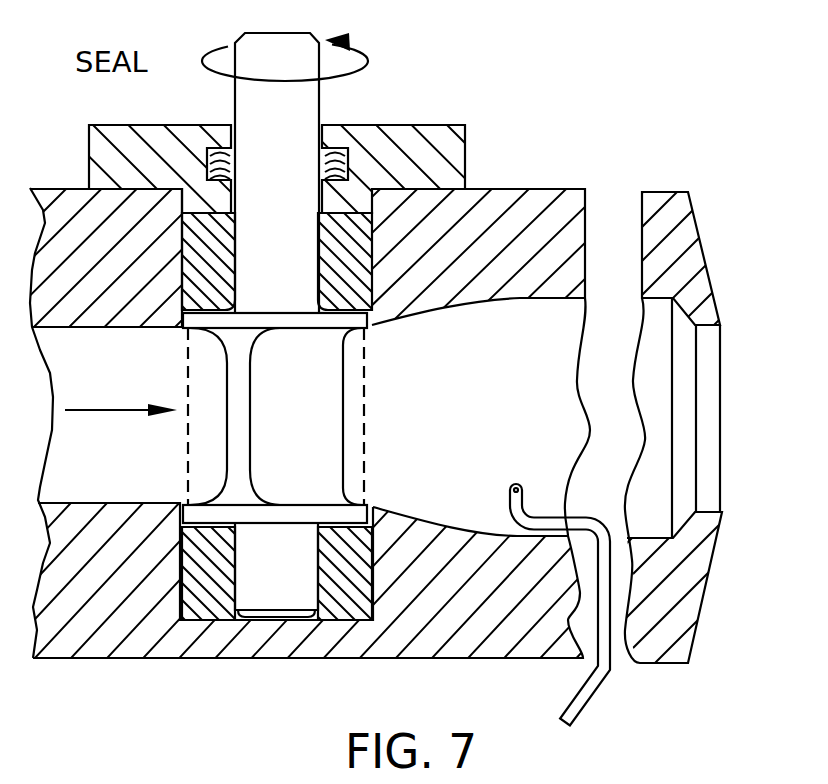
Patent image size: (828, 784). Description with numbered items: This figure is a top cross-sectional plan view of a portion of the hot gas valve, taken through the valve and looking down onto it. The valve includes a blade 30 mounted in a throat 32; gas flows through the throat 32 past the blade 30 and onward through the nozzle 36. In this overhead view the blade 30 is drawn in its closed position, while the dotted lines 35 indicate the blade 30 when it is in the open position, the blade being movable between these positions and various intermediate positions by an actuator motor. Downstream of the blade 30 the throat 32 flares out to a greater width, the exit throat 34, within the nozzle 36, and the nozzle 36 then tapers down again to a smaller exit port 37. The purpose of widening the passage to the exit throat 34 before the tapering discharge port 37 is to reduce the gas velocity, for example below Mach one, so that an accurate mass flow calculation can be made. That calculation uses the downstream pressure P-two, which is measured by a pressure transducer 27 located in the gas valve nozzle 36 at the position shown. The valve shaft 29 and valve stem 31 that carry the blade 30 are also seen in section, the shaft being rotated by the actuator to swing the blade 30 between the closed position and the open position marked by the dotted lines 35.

The pressure transducer 27 is at (580, 708).
The valve shaft 29 is at (298, 121).
The blade 30 is at (317, 430).
The valve stem 31 is at (295, 576).
The throat 32 is at (112, 492).
The exit throat 34 is at (508, 360).
The dotted lines 35 is at (187, 366).
The nozzle 36 is at (700, 250).
The exit port 37 is at (712, 372).